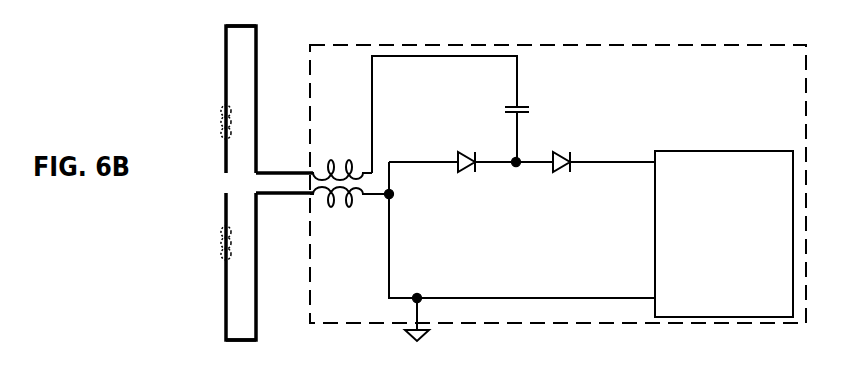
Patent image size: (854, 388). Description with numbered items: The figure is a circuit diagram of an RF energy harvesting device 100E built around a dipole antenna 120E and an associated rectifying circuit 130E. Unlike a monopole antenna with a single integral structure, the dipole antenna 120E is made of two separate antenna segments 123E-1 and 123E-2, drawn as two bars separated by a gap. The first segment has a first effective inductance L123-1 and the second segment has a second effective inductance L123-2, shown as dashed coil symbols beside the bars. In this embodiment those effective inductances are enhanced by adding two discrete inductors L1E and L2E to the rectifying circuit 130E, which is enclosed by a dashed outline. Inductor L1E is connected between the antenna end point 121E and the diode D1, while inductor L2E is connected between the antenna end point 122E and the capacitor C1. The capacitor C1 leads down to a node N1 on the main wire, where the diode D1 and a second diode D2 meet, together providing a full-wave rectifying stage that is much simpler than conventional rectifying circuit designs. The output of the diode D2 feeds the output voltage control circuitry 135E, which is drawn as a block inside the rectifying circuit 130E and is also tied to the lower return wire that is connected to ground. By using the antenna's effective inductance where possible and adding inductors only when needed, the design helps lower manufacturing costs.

The RF energy harvesting device 100E is at (213, 76).
The dipole antenna 120E is at (213, 222).
The antenna segment 123E-1 is at (258, 50).
The antenna segment 123E-2 is at (258, 318).
The antenna end point 122E is at (283, 171).
The antenna end point 121E is at (283, 195).
The second effective inductance L123-2 is at (221, 124).
The first effective inductance L123-1 is at (221, 251).
The inductor L2E is at (350, 161).
The inductor L1E is at (351, 205).
The capacitor C1 is at (511, 106).
The diode D1 is at (469, 154).
The diode D2 is at (561, 170).
The node N1 is at (519, 158).
The rectifying circuit 130E is at (558, 193).
The output voltage control circuitry 135E is at (724, 234).